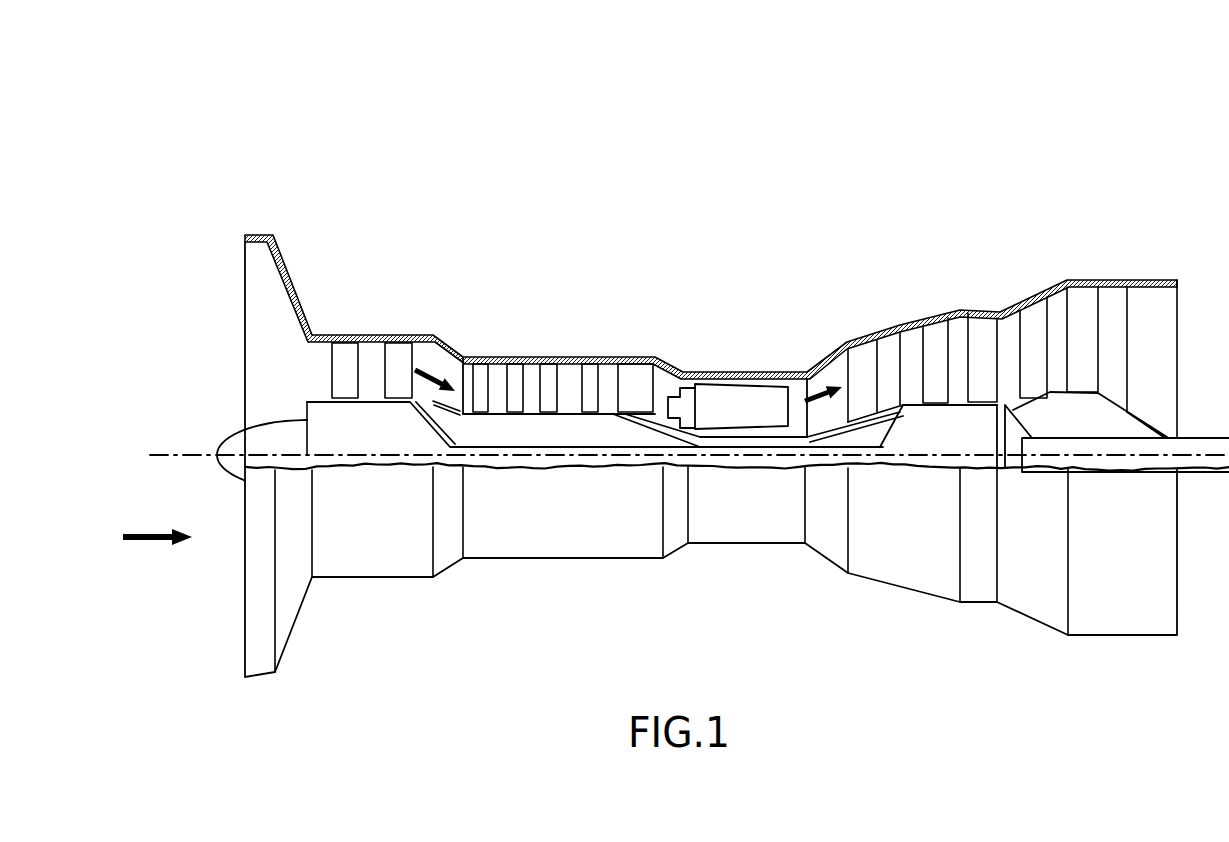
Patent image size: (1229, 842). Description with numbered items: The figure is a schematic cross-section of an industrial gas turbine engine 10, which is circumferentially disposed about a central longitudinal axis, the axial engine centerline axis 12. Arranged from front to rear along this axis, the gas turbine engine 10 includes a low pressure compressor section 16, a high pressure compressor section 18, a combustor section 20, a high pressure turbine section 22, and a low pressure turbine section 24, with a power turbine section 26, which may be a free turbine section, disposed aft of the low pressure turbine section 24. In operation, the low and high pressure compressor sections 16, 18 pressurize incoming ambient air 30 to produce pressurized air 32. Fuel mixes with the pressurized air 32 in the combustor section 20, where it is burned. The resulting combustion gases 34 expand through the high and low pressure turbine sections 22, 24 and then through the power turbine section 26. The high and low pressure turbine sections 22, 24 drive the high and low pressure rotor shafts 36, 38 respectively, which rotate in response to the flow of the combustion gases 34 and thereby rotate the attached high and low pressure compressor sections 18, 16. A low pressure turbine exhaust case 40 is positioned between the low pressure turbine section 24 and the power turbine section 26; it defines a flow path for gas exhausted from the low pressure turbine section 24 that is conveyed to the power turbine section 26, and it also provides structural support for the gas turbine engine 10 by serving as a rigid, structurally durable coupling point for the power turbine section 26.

The gas turbine engine 10 is at (804, 228).
The axial engine centerline axis 12 is at (190, 451).
The low pressure compressor section 16 is at (364, 318).
The high pressure compressor section 18 is at (582, 326).
The combustor section 20 is at (712, 361).
The high pressure turbine section 22 is at (896, 320).
The low pressure turbine section 24 is at (992, 293).
The power turbine section 26 is at (1127, 269).
The incoming ambient air 30 is at (153, 532).
The pressurized air 32 is at (436, 372).
The combustion gases 34 is at (817, 393).
The high pressure rotor shaft 36 is at (642, 429).
The low pressure rotor shaft 38 is at (444, 437).
The low pressure turbine exhaust case 40 is at (1011, 302).